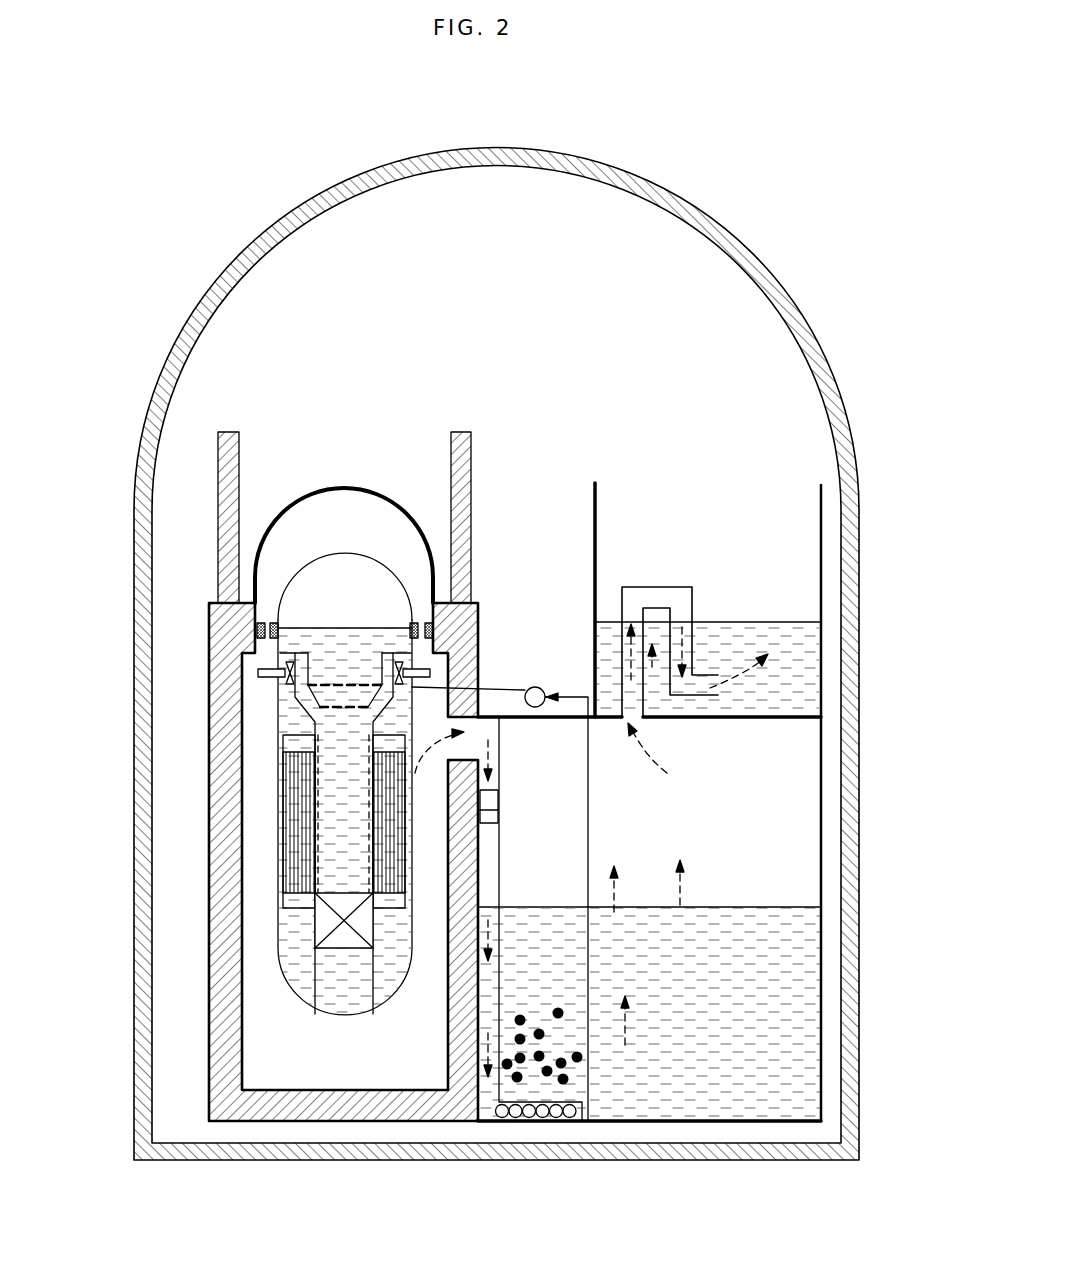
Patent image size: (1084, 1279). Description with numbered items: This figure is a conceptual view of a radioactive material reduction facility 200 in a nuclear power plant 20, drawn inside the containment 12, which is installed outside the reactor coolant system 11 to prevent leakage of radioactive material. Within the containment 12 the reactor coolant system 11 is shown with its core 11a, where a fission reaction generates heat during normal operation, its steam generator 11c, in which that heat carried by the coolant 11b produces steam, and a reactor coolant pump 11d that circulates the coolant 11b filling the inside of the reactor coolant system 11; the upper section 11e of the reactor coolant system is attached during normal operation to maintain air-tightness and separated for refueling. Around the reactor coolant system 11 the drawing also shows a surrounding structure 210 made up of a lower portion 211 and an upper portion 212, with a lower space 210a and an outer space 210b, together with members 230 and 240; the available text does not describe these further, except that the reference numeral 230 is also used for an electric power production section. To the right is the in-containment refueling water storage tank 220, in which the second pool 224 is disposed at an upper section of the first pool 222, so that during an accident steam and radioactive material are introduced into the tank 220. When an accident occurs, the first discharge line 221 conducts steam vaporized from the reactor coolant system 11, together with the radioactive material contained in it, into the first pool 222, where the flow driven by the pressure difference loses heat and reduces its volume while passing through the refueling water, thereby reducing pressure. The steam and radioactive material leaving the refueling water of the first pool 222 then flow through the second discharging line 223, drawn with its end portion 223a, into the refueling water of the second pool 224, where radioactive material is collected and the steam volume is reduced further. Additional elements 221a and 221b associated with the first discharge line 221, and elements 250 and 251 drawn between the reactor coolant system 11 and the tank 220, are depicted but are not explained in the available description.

The nuclear power plant 20 is at (496, 643).
The containment 12 is at (750, 265).
The radioactive material reduction facility 200 is at (649, 771).
The reactor containment vessel 210 is at (275, 716).
The lower containment vessel body 211 is at (247, 600).
The upper containment vessel dome 212 is at (345, 488).
The containment vessel lower space 210a is at (261, 986).
The containment building inner space 210b is at (281, 339).
The electric power production section 230 is at (471, 519).
The seal 240 is at (433, 632).
The reactor coolant system 11 is at (319, 821).
The core 11a is at (347, 955).
The coolant 11b is at (380, 985).
The steam generator 11c is at (297, 867).
The reactor coolant pump 11d is at (290, 676).
The upper section of the reactor coolant system 11e is at (352, 553).
The in-containment refueling water storage tank 220 is at (682, 490).
The first discharge line 221 is at (555, 921).
The filter 221a is at (535, 1118).
The discharge nozzle 221b is at (482, 820).
The first pool 222 is at (711, 878).
The second discharging line 223 is at (687, 643).
The siphon tube outlet 223a is at (695, 687).
The second pool 224 is at (758, 592).
The injection pipe 250 is at (525, 747).
The pump 251 is at (535, 708).